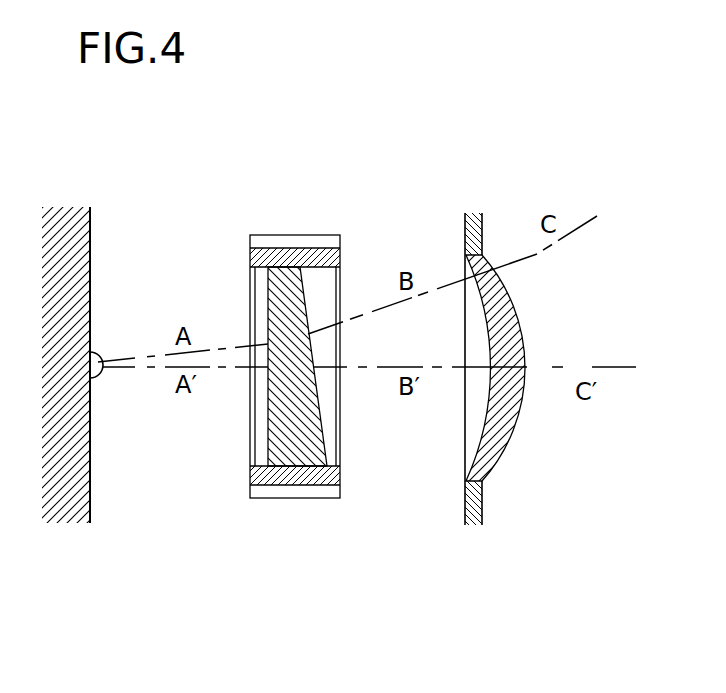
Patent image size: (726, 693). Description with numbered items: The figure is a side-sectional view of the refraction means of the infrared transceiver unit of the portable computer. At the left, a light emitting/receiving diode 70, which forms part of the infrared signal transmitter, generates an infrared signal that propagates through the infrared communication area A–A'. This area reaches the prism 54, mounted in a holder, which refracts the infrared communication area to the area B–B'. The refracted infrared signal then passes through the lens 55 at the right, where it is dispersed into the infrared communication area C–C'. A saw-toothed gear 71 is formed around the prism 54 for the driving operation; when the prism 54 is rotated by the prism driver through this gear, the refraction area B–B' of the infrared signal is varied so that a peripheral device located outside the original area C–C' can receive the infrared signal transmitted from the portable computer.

The light emitting/receiving diode 70 is at (119, 331).
The saw-toothed gear 71 is at (295, 337).
The prism 54 is at (253, 366).
The lens 55 is at (516, 370).